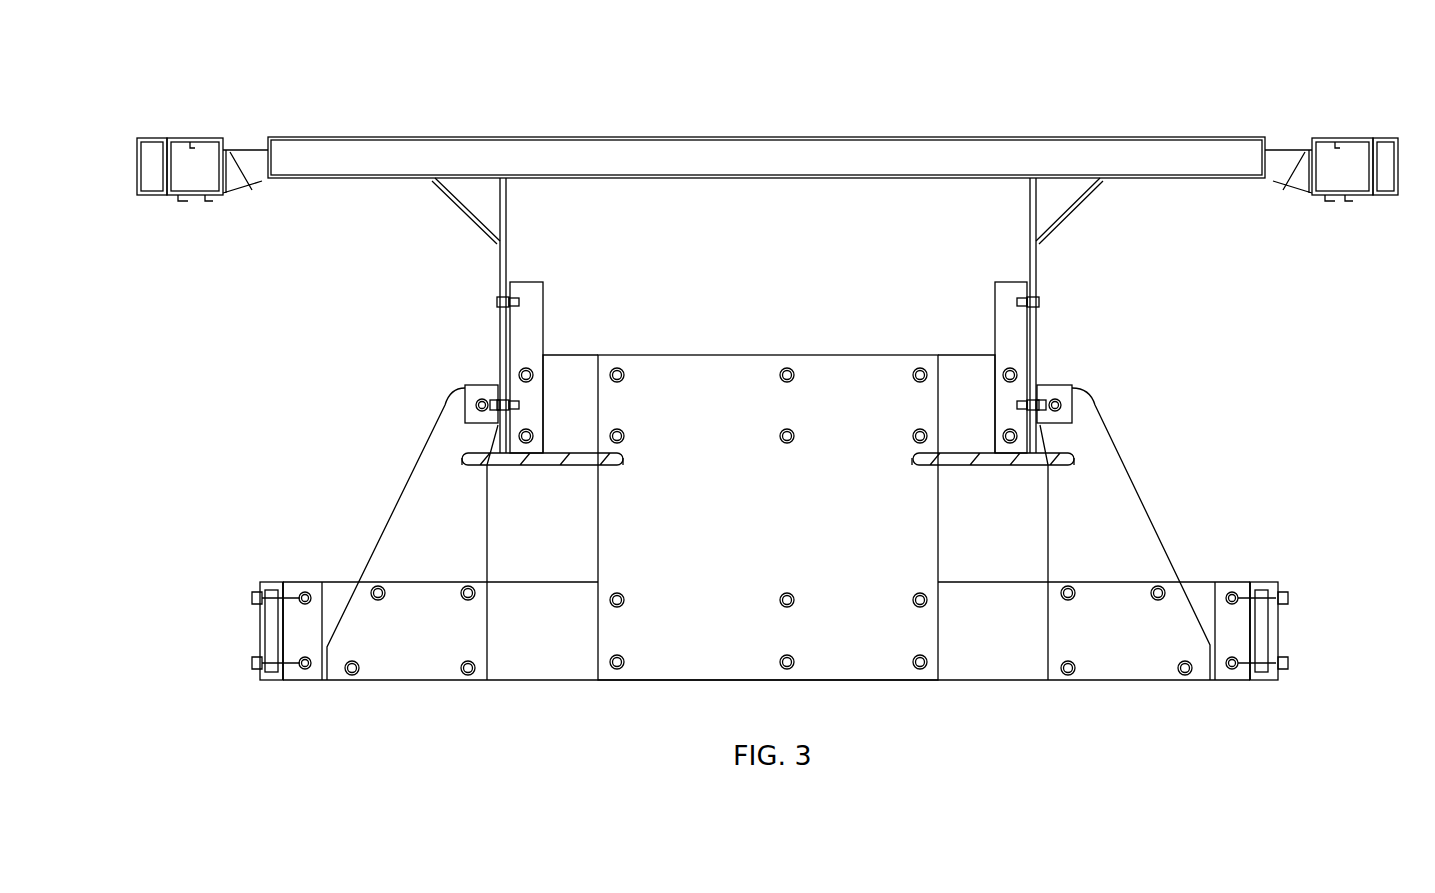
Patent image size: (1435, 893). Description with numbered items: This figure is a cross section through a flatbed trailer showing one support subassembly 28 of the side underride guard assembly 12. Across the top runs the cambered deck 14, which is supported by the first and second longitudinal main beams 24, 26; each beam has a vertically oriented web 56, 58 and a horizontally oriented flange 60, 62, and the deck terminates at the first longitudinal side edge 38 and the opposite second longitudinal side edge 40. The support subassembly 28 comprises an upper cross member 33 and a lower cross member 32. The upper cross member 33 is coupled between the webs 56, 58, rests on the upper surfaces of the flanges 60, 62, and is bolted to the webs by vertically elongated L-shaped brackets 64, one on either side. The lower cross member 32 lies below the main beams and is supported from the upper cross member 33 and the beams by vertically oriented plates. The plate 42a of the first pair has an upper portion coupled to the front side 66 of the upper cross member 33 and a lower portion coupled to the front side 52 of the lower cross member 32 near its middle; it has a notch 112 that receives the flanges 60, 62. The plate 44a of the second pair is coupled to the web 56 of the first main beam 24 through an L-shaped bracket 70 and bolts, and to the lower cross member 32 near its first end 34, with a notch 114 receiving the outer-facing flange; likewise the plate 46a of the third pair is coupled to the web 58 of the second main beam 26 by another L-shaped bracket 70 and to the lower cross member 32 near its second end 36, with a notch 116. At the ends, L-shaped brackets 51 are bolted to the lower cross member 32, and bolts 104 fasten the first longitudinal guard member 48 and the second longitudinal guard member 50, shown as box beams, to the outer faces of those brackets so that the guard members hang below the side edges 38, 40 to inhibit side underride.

The side underride guard assembly 12 is at (860, 315).
The deck 14 is at (800, 136).
The first longitudinal main beam 24 is at (510, 200).
The second longitudinal main beam 26 is at (1027, 200).
The support subassembly 28 is at (1192, 455).
The lower cross member 32 is at (985, 648).
The upper cross member 33 is at (572, 378).
The first end 34 is at (290, 688).
The second end 36 is at (1250, 688).
The first longitudinal side edge 38 is at (152, 134).
The second longitudinal side edge 40 is at (1386, 134).
The vertically oriented plate 42a is at (806, 534).
The vertically oriented plate 44a is at (450, 574).
The vertically oriented plate 46a is at (1131, 569).
The first longitudinal guard member 48 is at (260, 632).
The second longitudinal guard member 50 is at (1265, 598).
The L-shaped bracket 51 is at (303, 590).
The front side 52 is at (548, 640).
The web 56 is at (500, 258).
The web 58 is at (1036, 258).
The flange 60 is at (567, 454).
The flange 62 is at (968, 454).
The L-shaped bracket 64 is at (527, 318).
The front side 66 is at (965, 378).
The L-shaped bracket 70 is at (463, 408).
The bolt 104 is at (272, 598).
The notch 112 is at (623, 465).
The notch 114 is at (475, 465).
The notch 116 is at (1061, 465).